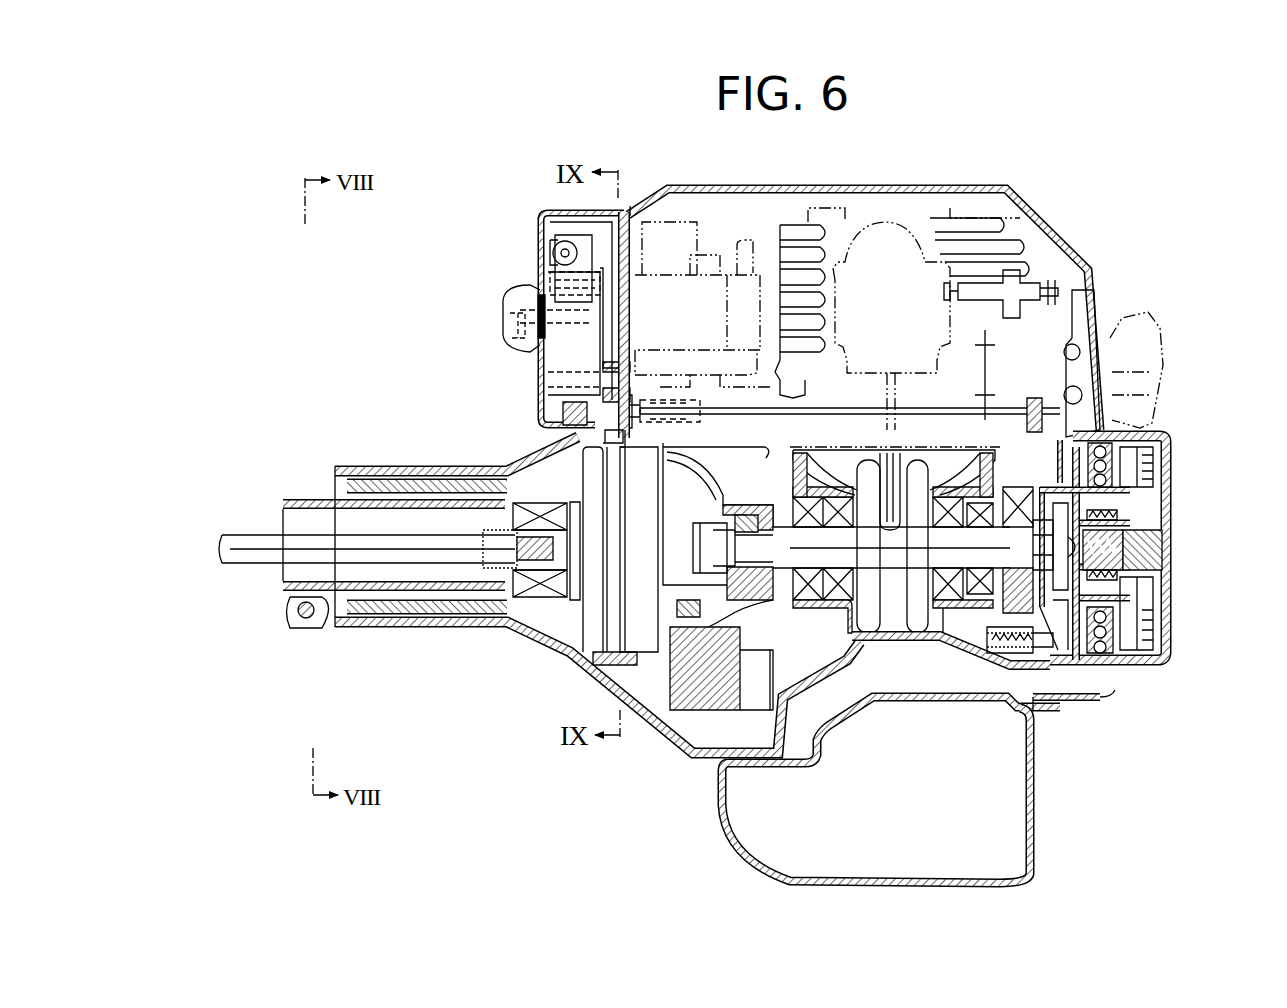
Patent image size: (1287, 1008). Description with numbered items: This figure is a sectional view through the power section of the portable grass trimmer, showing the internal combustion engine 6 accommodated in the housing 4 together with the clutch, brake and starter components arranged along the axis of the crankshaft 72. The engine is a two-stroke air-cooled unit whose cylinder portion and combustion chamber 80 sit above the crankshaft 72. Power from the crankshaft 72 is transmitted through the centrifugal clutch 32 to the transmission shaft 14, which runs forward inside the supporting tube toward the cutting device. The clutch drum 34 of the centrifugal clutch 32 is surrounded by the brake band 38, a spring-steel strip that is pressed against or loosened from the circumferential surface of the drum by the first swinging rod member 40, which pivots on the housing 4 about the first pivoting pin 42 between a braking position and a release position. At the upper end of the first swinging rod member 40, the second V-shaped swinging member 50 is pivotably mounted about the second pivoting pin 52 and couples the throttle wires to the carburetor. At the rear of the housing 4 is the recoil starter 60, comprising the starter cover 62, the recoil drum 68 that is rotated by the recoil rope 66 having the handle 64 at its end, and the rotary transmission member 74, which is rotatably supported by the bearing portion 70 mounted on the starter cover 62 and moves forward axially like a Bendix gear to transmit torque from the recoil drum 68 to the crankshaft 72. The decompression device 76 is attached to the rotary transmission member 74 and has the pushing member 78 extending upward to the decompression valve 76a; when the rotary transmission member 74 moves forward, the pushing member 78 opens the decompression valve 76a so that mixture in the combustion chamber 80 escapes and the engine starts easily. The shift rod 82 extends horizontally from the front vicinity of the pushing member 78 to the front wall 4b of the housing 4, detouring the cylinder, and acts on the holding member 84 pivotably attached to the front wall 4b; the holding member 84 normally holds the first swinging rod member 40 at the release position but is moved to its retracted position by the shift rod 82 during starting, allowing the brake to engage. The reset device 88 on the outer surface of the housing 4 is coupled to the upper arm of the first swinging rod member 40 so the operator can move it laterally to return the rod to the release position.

The housing 4 is at (936, 186).
The front wall 4b is at (631, 211).
The internal combustion engine 6 is at (838, 634).
The transmission shaft 14 is at (275, 553).
The centrifugal clutch 32 is at (648, 660).
The clutch drum 34 is at (610, 640).
The brake band 38 is at (598, 665).
The first swinging rod member 40 is at (563, 363).
The first pivoting pin 42 is at (550, 380).
The second V-shaped swinging member 50 is at (577, 238).
The second pivoting pin 52 is at (537, 275).
The recoil starter 60 is at (1166, 430).
The starter cover 62 is at (1173, 470).
The handle 64 is at (1143, 335).
The recoil rope 66 is at (1100, 645).
The recoil drum 68 is at (1150, 585).
The bearing portion 70 is at (1170, 520).
The crankshaft 72 is at (963, 550).
The rotary transmission member 74 is at (1100, 703).
The decompression device 76 is at (1061, 282).
The decompression valve 76a is at (1024, 280).
The pushing member 78 is at (1093, 277).
The combustion chamber 80 is at (883, 222).
The shift rod 82 is at (793, 420).
The holding member 84 is at (563, 414).
The reset device 88 is at (530, 297).